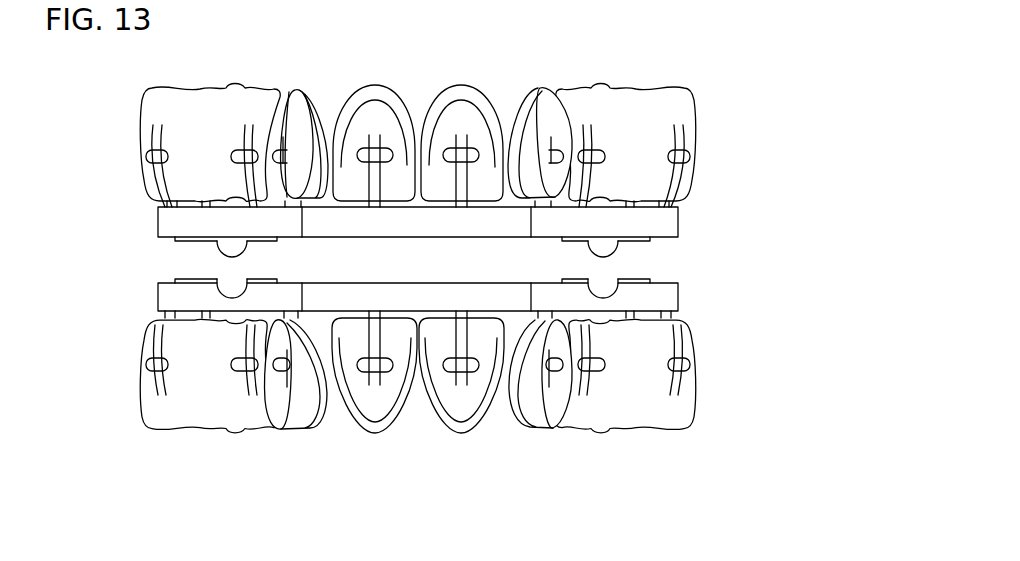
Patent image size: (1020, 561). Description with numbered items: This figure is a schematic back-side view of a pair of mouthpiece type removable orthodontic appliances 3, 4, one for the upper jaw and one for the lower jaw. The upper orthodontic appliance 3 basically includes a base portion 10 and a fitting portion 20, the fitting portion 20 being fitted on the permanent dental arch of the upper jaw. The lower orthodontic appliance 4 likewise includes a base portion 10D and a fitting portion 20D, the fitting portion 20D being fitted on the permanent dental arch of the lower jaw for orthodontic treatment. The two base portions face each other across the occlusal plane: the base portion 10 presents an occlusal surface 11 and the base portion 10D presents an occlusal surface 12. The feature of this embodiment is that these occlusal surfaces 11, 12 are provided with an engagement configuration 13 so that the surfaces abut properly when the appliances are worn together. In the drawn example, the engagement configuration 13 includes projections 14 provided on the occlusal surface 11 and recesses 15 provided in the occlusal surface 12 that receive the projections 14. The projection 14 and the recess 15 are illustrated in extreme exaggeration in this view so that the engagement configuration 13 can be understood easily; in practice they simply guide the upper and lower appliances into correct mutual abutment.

The orthodontic appliance 3 is at (703, 173).
The orthodontic appliance 4 is at (703, 334).
The base portion 10 is at (680, 220).
The base portion 10D is at (680, 296).
The occlusal surface 11 is at (176, 243).
The occlusal surface 12 is at (176, 276).
The engagement configuration 13 is at (397, 260).
The projection 14 is at (237, 256).
The recess 15 is at (237, 295).
The fitting portion 20 is at (710, 90).
The fitting portion 20D is at (707, 428).